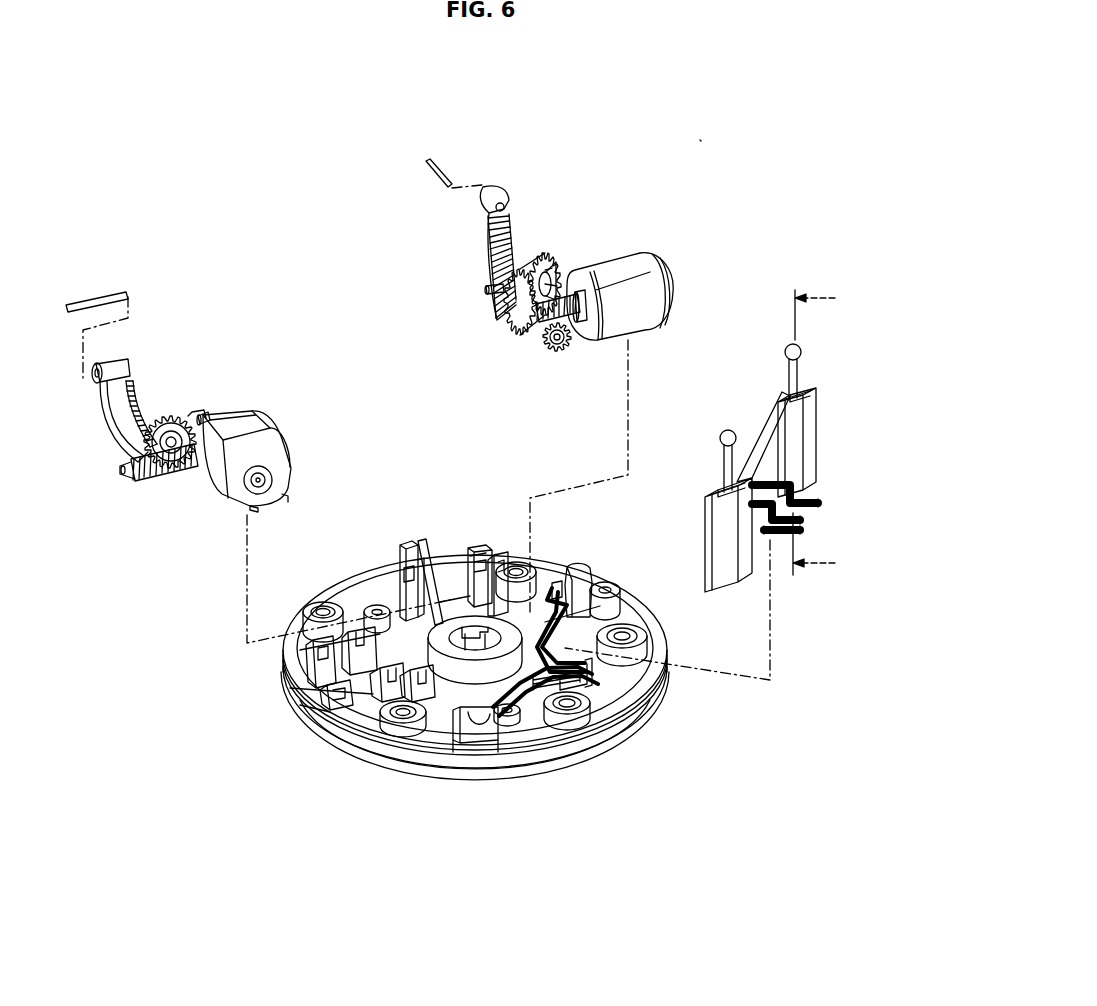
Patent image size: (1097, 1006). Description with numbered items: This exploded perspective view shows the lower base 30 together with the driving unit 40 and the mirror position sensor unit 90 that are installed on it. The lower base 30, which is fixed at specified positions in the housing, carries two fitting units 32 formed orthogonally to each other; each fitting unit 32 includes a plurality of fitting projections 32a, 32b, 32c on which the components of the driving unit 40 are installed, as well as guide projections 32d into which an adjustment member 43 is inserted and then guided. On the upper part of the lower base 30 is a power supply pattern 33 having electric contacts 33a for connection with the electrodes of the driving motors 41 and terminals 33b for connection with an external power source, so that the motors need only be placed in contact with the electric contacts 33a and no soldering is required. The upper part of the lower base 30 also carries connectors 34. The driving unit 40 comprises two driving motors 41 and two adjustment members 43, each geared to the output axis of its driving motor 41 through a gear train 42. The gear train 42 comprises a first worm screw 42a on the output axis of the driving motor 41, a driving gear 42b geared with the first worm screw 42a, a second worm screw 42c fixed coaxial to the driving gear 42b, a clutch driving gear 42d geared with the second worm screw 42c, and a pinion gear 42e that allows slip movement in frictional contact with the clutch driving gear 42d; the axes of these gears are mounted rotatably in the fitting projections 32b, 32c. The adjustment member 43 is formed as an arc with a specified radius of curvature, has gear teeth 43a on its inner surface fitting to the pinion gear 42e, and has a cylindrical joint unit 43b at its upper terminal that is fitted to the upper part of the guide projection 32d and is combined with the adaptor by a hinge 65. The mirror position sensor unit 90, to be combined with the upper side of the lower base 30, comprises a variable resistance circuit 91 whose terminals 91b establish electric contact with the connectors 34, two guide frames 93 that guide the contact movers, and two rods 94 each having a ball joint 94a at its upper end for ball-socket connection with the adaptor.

The lower base 30 is at (232, 762).
The fitting unit 32 is at (447, 482).
The fitting projection 32a is at (493, 546).
The fitting projection 32b is at (463, 546).
The fitting projection 32c is at (432, 548).
The guide projection 32d is at (407, 540).
The power supply pattern 33 is at (613, 587).
The electric contact 33a is at (550, 563).
The terminal 33b is at (648, 696).
The connector 34 is at (543, 693).
The driving unit 40 is at (683, 165).
The driving motor 41 is at (207, 467).
The gear train 42 is at (470, 333).
The first worm screw 42a is at (207, 417).
The driving gear 42b is at (533, 343).
The second worm screw 42c is at (133, 473).
The clutch driving gear 42d is at (173, 413).
The pinion gear 42e is at (150, 407).
The adjustment member 43 is at (117, 413).
The gear teeth 43a is at (132, 393).
The cylindrical joint unit 43b is at (113, 365).
The hinge 65 is at (88, 300).
The mirror position sensor unit 90 is at (835, 372).
The variable resistance circuit 91 is at (760, 422).
The terminal 91b is at (776, 540).
The guide frame 93 is at (723, 570).
The rod 94 is at (723, 470).
The ball joint 94a is at (727, 437).